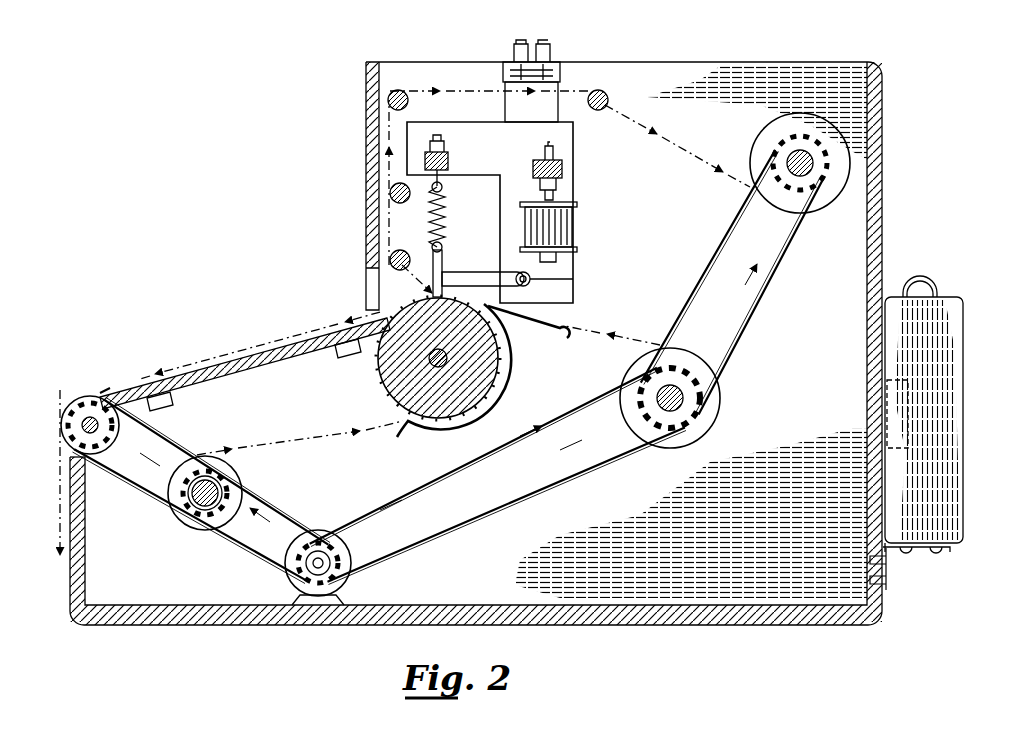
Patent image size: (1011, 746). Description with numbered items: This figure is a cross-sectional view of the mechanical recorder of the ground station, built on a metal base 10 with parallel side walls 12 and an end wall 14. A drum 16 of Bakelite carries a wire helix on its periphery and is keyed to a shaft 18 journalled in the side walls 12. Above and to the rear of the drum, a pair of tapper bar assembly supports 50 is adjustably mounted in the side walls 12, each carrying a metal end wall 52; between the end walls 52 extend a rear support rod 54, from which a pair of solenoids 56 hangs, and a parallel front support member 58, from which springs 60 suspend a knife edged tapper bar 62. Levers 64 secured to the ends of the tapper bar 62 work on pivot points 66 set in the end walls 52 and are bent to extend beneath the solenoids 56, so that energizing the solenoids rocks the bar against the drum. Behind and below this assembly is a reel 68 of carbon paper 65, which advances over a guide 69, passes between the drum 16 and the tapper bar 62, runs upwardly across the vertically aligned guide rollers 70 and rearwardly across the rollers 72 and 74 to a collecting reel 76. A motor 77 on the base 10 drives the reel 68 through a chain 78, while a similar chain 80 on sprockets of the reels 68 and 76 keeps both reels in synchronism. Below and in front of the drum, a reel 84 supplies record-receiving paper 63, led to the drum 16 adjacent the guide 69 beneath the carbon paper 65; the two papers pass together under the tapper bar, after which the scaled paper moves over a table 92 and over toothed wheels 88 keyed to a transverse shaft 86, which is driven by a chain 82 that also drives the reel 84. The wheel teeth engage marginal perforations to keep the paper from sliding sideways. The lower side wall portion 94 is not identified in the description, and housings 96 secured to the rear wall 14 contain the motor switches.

The metal base 10 is at (772, 612).
The side walls 12 is at (705, 66).
The end wall 14 is at (872, 120).
The drum 16 is at (393, 397).
The shaft 18 is at (447, 359).
The tapper bar assembly supports 50 is at (558, 63).
The end wall 52 is at (573, 131).
The rear support rod 54 is at (564, 170).
The solenoids 56 is at (578, 227).
The front support member 58 is at (450, 162).
The springs 60 is at (442, 212).
The tapper bar 62 is at (441, 263).
The record-receiving paper 63 is at (318, 327).
The levers 64 is at (460, 277).
The carbon paper 65 is at (720, 170).
The pivot points 66 is at (573, 279).
The reel 68 is at (712, 420).
The guide 69 is at (537, 325).
The guide rollers 70 is at (401, 250).
The roller 72 is at (404, 92).
The roller 74 is at (603, 95).
The collecting reel 76 is at (803, 122).
The motor 77 is at (340, 584).
The chain 78 is at (493, 512).
The chain 80 is at (757, 301).
The chain 82 is at (241, 543).
The reel 84 is at (185, 517).
The transverse shaft 86 is at (63, 430).
The toothed wheels 88 is at (100, 391).
The table 92 is at (250, 365).
The lower side wall 94 is at (87, 495).
The housings 96 is at (950, 421).